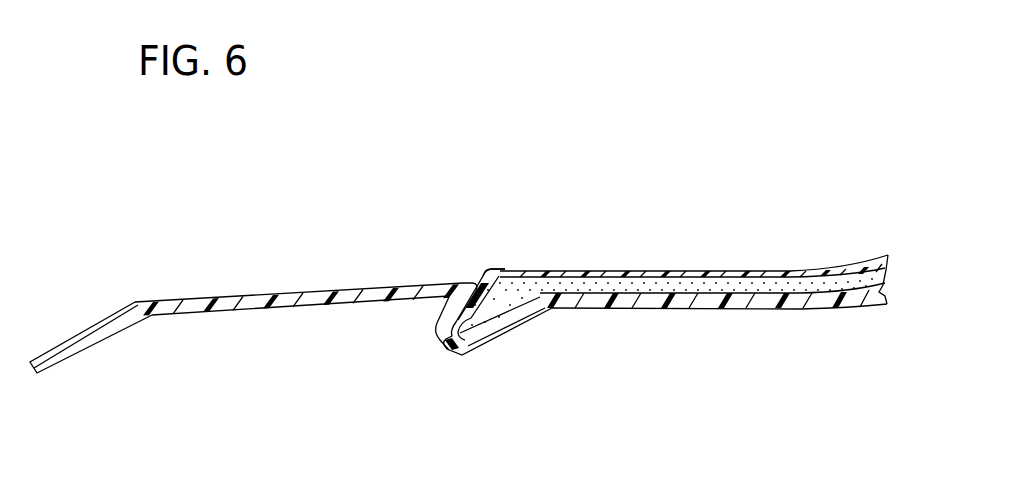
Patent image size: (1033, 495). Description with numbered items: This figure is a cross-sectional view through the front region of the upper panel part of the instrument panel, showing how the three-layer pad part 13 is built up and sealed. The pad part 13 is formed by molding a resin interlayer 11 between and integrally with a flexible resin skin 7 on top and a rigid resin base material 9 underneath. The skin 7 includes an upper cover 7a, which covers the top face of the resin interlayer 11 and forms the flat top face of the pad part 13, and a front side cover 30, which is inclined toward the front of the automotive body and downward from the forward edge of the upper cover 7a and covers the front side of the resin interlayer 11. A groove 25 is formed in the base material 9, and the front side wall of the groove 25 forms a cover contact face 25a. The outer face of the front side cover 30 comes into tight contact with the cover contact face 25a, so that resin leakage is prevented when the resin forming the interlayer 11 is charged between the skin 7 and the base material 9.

The flexible resin skin 7 is at (686, 225).
The upper cover 7a is at (755, 273).
The three-layer pad part 13 is at (572, 245).
The resin interlayer 11 is at (832, 285).
The rigid resin base material 9 is at (235, 293).
The groove 25 is at (466, 281).
The cover contact face 25a is at (503, 270).
The front side cover 30 is at (452, 281).